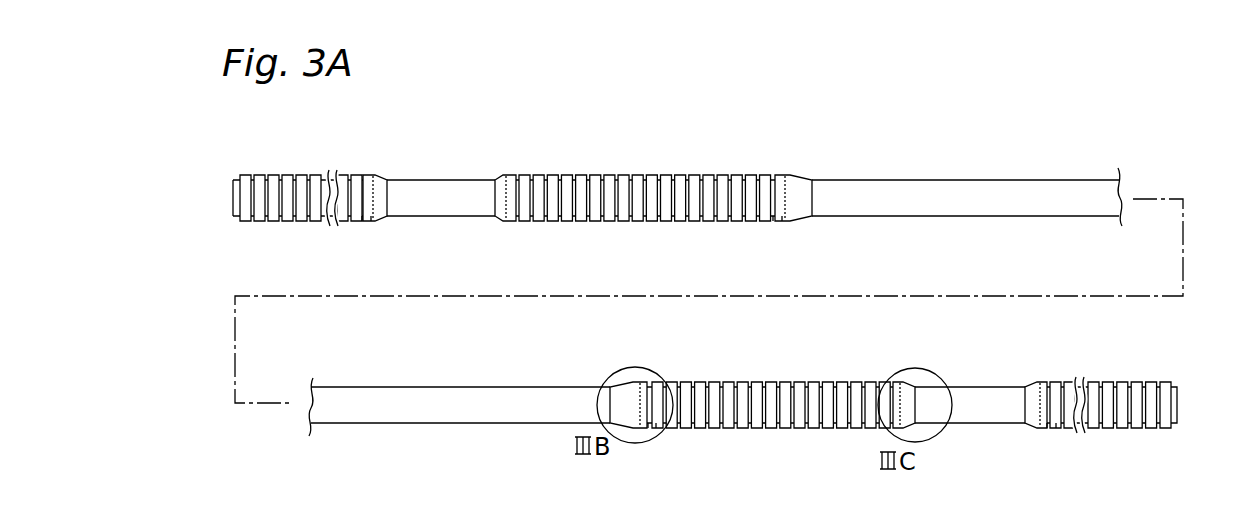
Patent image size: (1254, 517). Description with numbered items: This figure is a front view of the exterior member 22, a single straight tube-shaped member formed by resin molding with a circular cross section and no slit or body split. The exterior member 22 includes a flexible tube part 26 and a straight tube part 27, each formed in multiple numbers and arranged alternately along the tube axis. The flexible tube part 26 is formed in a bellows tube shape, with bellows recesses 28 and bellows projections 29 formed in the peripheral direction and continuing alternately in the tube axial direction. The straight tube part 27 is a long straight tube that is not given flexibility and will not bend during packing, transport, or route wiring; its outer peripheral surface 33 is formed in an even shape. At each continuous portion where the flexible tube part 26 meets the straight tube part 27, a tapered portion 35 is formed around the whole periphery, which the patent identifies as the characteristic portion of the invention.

The exterior member 22 is at (909, 137).
The flexible tube part 26 is at (317, 173).
The straight tube part 27 is at (465, 178).
The bellows recess 28 is at (363, 219).
The bellows projection 29 is at (371, 219).
The outer peripheral surface 33 is at (443, 207).
The tapered portion 35 is at (383, 186).